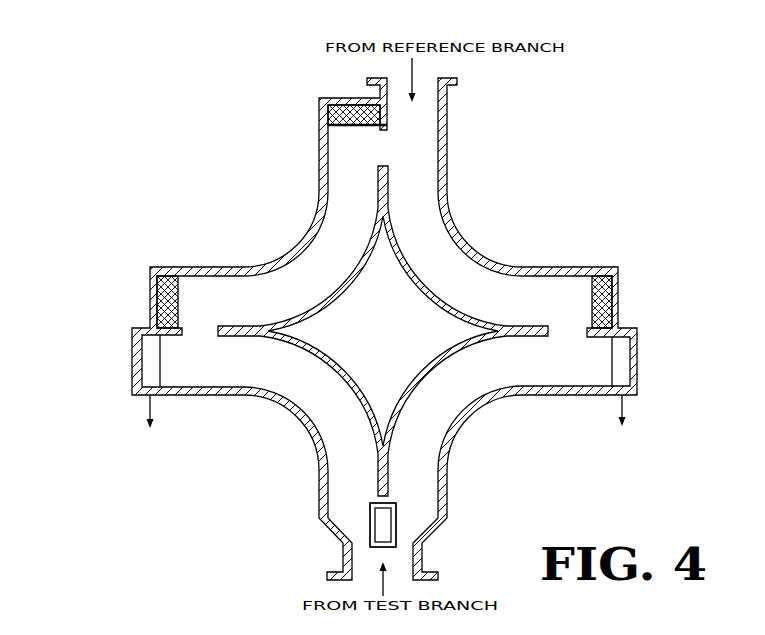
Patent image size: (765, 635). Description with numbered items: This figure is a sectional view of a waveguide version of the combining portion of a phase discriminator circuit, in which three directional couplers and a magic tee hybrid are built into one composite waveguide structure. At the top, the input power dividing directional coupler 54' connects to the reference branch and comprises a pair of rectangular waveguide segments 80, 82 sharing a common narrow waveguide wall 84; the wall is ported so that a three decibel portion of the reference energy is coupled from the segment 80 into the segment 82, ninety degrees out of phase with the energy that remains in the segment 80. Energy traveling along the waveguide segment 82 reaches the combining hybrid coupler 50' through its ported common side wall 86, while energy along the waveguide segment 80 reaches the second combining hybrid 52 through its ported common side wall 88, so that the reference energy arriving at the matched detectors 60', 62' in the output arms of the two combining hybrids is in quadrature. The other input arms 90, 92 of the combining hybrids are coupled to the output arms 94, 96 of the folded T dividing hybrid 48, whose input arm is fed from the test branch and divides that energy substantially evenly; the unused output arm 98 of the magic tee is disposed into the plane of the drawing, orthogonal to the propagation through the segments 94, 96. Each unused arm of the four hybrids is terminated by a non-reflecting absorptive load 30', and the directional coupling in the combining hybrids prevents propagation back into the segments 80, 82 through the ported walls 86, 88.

The folded T dividing hybrid 48 is at (478, 520).
The non-reflecting absorptive load 30' is at (389, 318).
The combining hybrid coupler 50' is at (163, 278).
The second combining hybrid 52 is at (605, 253).
The input power dividing 3 db directional coupler 54' is at (332, 72).
The detector 60' is at (119, 378).
The detector 62' is at (668, 377).
The waveguide segment 80 is at (447, 106).
The waveguide segment 82 is at (319, 181).
The common narrow waveguide wall 84 is at (388, 123).
The ported common side wall 86 is at (217, 327).
The ported common side wall 88 is at (531, 327).
The input arm 90 is at (270, 416).
The input arm 92 is at (477, 413).
The output arm 94 is at (320, 490).
The output arm 96 is at (447, 487).
The unused output arm 98 is at (370, 536).